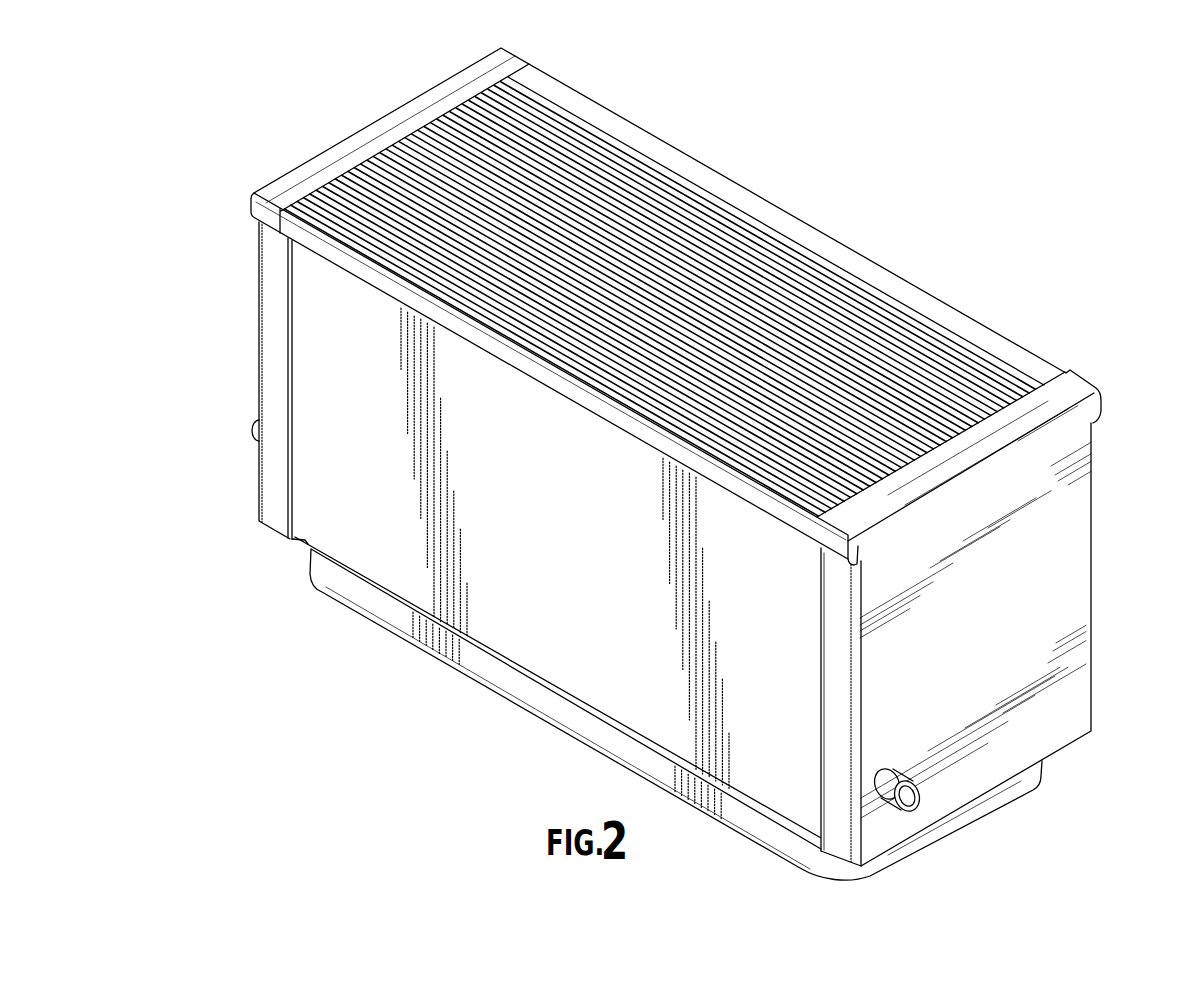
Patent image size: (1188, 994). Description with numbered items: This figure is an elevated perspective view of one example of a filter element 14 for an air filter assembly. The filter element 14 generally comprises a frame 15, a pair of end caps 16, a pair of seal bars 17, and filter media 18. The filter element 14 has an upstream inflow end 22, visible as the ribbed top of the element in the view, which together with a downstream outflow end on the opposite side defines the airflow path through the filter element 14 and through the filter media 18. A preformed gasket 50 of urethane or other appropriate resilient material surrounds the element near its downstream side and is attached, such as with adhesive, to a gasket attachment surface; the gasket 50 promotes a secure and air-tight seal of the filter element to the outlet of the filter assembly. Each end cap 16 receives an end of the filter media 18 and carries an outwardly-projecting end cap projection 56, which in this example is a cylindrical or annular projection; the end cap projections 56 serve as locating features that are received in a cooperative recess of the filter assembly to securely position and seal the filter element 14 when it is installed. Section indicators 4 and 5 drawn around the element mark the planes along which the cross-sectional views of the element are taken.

The filter element 14 is at (1030, 223).
The upstream inflow end 22 is at (613, 142).
The filter media 18 is at (678, 207).
The seal bars 17 is at (983, 318).
The end caps 16 is at (251, 358).
The end cap projection 56 is at (248, 425).
The frame 15 is at (292, 540).
The preformed gasket 50 is at (832, 872).
The section line 4- 4 is at (297, 148).
The section line 5- 5 is at (1165, 380).